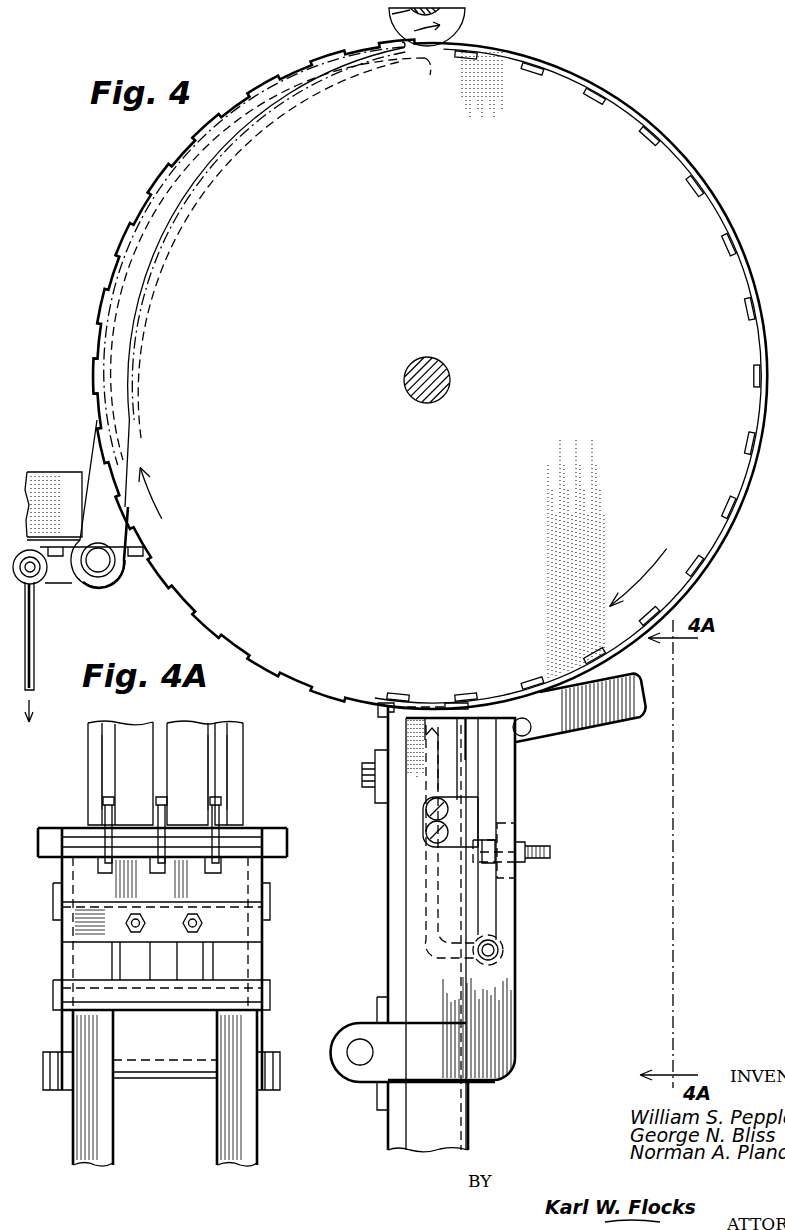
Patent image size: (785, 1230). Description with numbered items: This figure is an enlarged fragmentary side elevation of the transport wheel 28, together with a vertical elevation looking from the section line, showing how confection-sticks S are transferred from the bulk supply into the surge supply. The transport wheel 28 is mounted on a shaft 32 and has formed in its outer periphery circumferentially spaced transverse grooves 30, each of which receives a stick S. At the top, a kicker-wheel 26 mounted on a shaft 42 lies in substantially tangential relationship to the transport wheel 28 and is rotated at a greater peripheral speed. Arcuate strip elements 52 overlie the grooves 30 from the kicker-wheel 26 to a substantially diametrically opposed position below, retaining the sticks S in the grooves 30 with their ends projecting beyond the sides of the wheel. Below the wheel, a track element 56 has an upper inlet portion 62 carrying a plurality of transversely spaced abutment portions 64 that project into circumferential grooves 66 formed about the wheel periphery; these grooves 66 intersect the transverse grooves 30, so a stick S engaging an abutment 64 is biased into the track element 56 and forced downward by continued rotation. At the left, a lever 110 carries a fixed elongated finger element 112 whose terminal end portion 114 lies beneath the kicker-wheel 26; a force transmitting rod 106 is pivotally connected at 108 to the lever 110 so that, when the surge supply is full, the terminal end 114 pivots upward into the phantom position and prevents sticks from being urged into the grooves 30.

In FIG. 4, the kicker-wheel 26 is at (392, 15).
In FIG. 4, the transport wheel 28 is at (336, 319).
In FIG. 4A, the transport wheel 28 is at (236, 732).
In FIG. 4, the transverse grooves 30 is at (586, 90).
In FIG. 4, the shaft 32 is at (429, 392).
In FIG. 4, the shaft 42 is at (401, 12).
In FIG. 4, the arcuate strip elements 52 is at (738, 224).
In FIG. 4, the track element 56 is at (443, 1110).
In FIG. 4, the upper inlet portion 62 is at (447, 703).
In FIG. 4, the abutment portions 64 is at (400, 716).
In FIG. 4A, the abutment portions 64 is at (112, 800).
In FIG. 4A, the circumferential grooves 66 is at (112, 750).
In FIG. 4, the force transmitting rod 106 is at (27, 651).
In FIG. 4, the pivotal connection 108 is at (42, 590).
In FIG. 4, the lever 110 is at (80, 585).
In FIG. 4, the finger element 112 is at (300, 68).
In FIG. 4, the terminal end portion 114 is at (432, 80).
In FIG. 4, the confection-sticks S is at (405, 741).